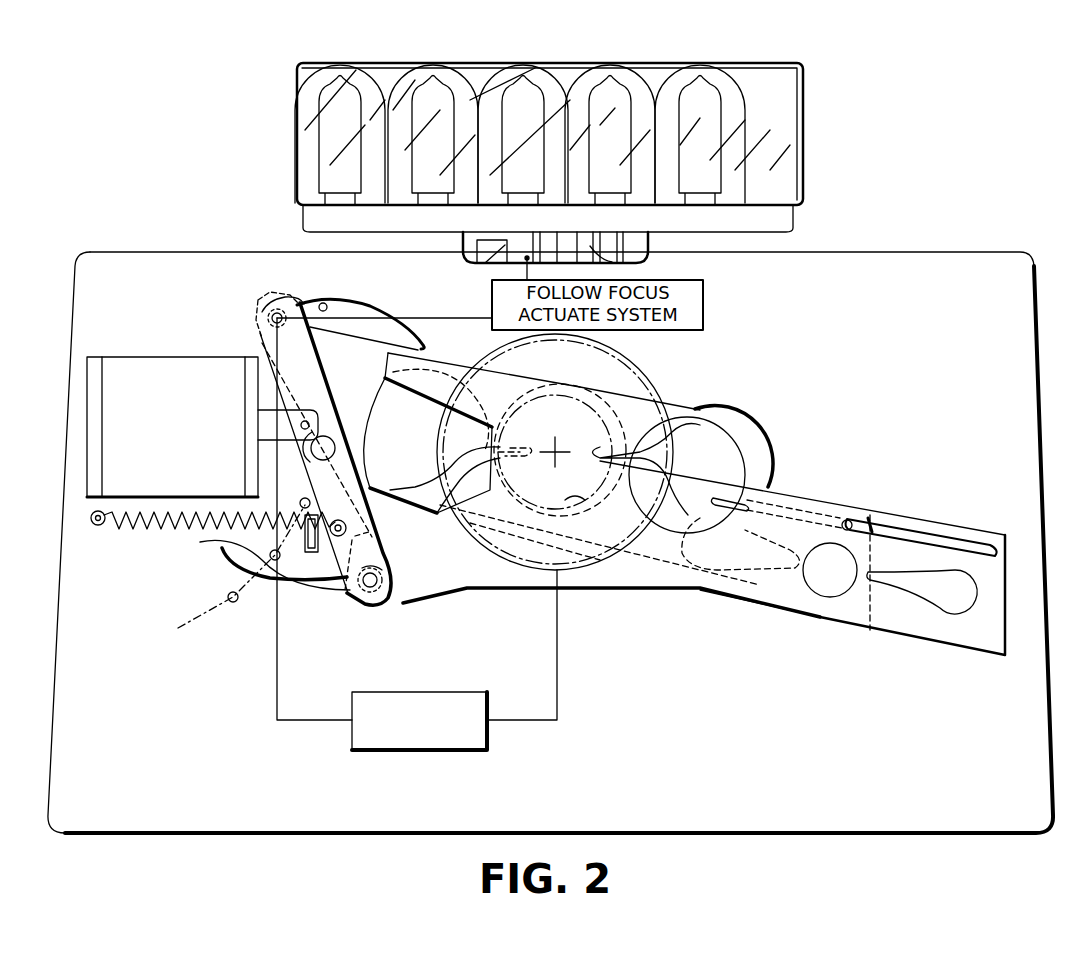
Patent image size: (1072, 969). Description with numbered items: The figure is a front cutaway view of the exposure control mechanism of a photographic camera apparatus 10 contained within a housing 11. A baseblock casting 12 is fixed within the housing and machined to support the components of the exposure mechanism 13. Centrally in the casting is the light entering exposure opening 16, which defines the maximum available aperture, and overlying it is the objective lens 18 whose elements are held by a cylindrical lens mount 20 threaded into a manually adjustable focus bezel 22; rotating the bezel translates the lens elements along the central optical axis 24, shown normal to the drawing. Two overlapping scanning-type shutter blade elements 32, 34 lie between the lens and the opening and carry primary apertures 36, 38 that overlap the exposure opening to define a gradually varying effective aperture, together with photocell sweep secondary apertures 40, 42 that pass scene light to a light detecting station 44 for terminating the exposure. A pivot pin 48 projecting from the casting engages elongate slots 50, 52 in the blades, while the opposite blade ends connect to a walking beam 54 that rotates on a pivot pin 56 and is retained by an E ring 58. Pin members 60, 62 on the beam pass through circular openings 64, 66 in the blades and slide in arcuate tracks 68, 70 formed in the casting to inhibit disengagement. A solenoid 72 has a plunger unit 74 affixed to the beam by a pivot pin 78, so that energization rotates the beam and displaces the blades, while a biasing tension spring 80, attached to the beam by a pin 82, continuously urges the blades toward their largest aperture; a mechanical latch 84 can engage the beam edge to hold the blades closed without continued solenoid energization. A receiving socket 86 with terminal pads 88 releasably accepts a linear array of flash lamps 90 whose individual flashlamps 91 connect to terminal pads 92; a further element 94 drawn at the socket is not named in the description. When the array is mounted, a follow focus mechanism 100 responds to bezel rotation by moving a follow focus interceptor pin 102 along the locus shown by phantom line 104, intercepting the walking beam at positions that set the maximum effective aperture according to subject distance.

The photographic camera apparatus 10 is at (980, 236).
The housing 11 is at (1040, 343).
The baseblock casting 12 is at (695, 504).
The exposure mechanism 13 is at (694, 398).
The light entering exposure opening 16 is at (585, 503).
The objective lens 18 is at (560, 450).
The cylindrical lens mount 20 is at (648, 385).
The focus bezel 22 is at (672, 443).
The central optical axis 24 is at (555, 463).
The shutter blade element 32 is at (366, 333).
The shutter blade element 34 is at (612, 590).
The primary aperture 36 is at (362, 418).
The primary aperture 38 is at (640, 508).
The photocell sweep secondary aperture 40 is at (735, 558).
The photocell sweep secondary aperture 42 is at (962, 612).
The light detecting station 44 is at (837, 583).
The pivot pin 48 is at (848, 518).
The elongate slot 50 is at (797, 515).
The elongate slot 52 is at (955, 540).
The walking beam 54 is at (385, 541).
The pivot pin 56 is at (330, 436).
The E ring 58 is at (336, 448).
The pin member 60 is at (268, 316).
The pin member 62 is at (370, 588).
The circular opening 64 is at (282, 305).
The circular opening 66 is at (383, 578).
The arcuate track 68 is at (324, 303).
The arcuate track 70 is at (305, 592).
The solenoid 72 is at (131, 356).
The plunger unit 74 is at (300, 442).
The pivot pin 78 is at (303, 420).
The biasing tension spring 80 is at (160, 528).
The pin 82 is at (340, 519).
The mechanical latch 84 is at (303, 554).
The receiving socket 86 is at (630, 232).
The terminal pads 88 is at (592, 264).
The linear array of flash lamps 90 is at (805, 119).
The flashlamp 91 is at (699, 100).
The terminal pads 92 is at (615, 236).
The switch 94 is at (490, 265).
The follow focus mechanism 100 is at (418, 752).
The follow focus interceptor pin 102 is at (259, 560).
The phantom line 104 is at (240, 600).